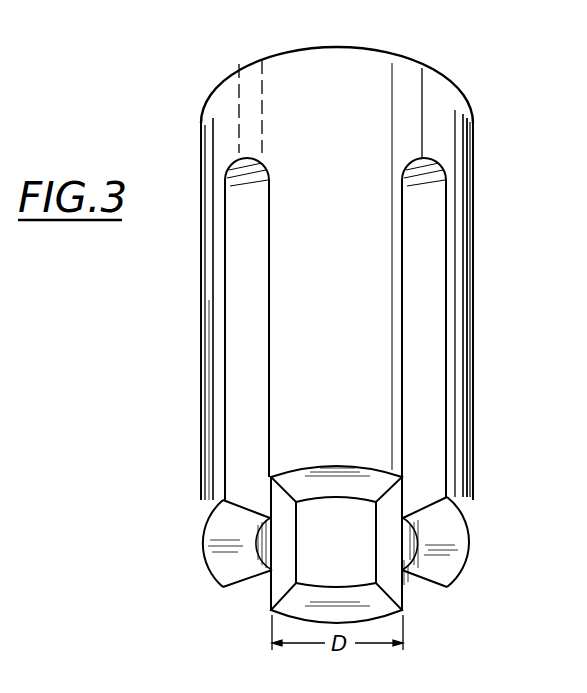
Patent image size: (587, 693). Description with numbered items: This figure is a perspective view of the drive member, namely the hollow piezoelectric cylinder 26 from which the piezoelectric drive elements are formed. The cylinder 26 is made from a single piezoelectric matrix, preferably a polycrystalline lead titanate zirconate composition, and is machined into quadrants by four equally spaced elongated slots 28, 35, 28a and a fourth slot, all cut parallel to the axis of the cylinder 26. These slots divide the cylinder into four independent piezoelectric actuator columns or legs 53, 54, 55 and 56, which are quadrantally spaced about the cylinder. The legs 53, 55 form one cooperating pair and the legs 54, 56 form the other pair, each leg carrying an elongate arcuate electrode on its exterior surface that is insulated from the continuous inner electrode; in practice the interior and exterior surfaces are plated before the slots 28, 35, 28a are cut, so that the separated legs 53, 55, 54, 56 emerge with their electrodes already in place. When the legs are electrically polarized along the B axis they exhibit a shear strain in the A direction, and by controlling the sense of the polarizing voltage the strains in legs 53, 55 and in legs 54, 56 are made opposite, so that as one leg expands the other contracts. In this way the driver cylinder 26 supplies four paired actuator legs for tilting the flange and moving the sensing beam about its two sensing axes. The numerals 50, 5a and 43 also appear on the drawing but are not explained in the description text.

The hollow cylinder 26 is at (200, 162).
The cylindrical sleeve 50 is at (473, 145).
The left slot 5a is at (233, 286).
The elongated slot 28a is at (433, 296).
The piezoelectric actuator leg 53 is at (201, 415).
The piezoelectric actuator leg 54 is at (388, 418).
The piezoelectric actuator leg 55 is at (473, 478).
The right lug 43 is at (445, 547).
The elongated slot 28 is at (403, 587).
The elongated slot 35 is at (282, 582).
The piezoelectric actuator leg 56 is at (390, 615).